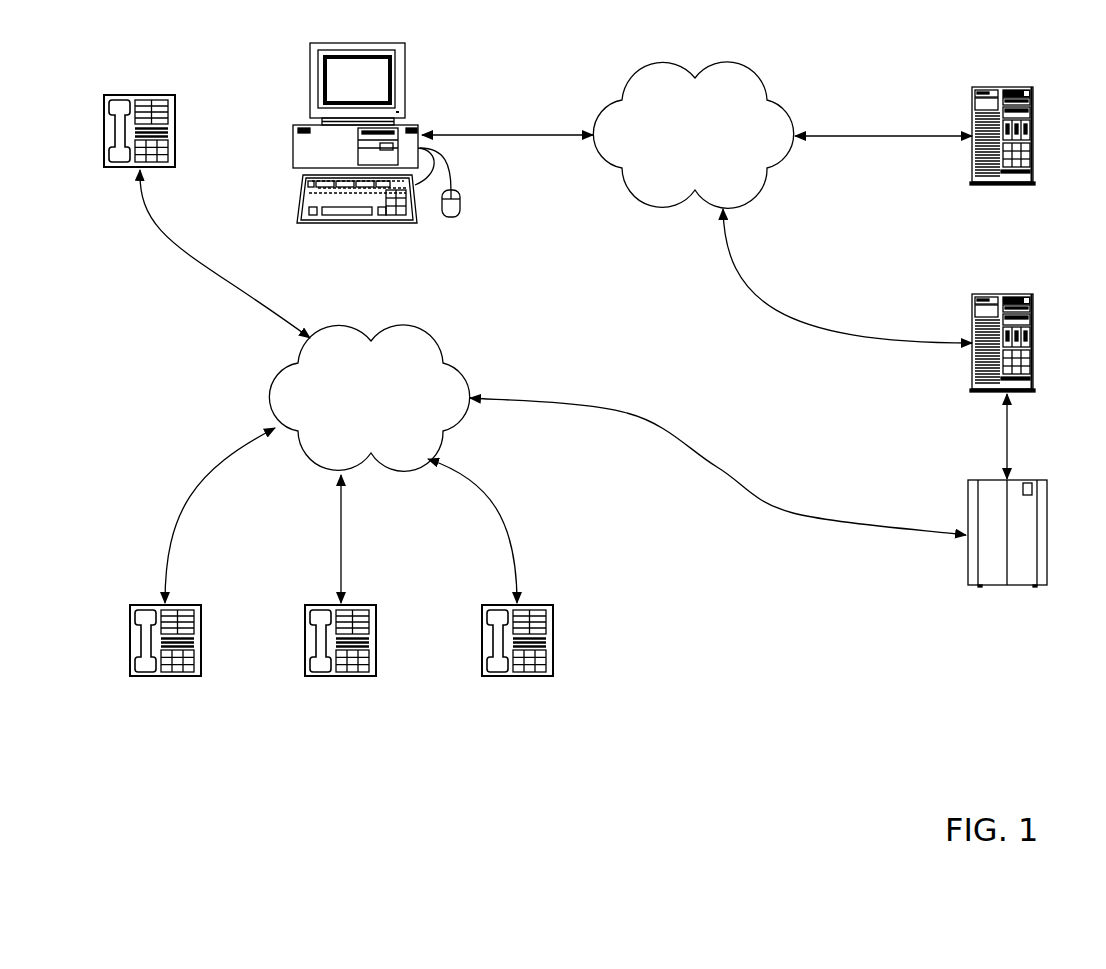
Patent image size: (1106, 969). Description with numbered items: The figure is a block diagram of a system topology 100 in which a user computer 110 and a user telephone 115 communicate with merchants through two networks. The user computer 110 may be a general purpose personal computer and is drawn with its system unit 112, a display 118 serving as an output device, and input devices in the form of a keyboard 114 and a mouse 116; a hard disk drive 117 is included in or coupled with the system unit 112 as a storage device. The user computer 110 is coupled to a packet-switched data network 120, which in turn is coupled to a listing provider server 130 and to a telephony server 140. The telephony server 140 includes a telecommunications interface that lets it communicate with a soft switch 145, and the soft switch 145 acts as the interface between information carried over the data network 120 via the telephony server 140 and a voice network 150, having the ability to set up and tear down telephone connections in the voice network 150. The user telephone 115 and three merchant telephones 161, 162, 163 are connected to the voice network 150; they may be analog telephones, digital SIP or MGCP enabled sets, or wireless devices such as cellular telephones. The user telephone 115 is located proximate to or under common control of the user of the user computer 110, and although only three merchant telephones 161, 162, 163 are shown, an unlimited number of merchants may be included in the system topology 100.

The system topology 100 is at (145, 339).
The user computer 110 is at (377, 117).
The system unit 112 is at (302, 124).
The keyboard 114 is at (298, 185).
The user telephone 115 is at (140, 90).
The mouse 116 is at (460, 194).
The hard disk drive 117 is at (395, 157).
The display 118 is at (404, 76).
The data network 120 is at (693, 135).
The listing provider server 130 is at (1003, 109).
The telephony server 140 is at (990, 315).
The soft switch 145 is at (1007, 562).
The voice network 150 is at (369, 398).
The merchant telephone 161 is at (166, 682).
The merchant telephone 162 is at (341, 682).
The merchant telephone 163 is at (517, 682).